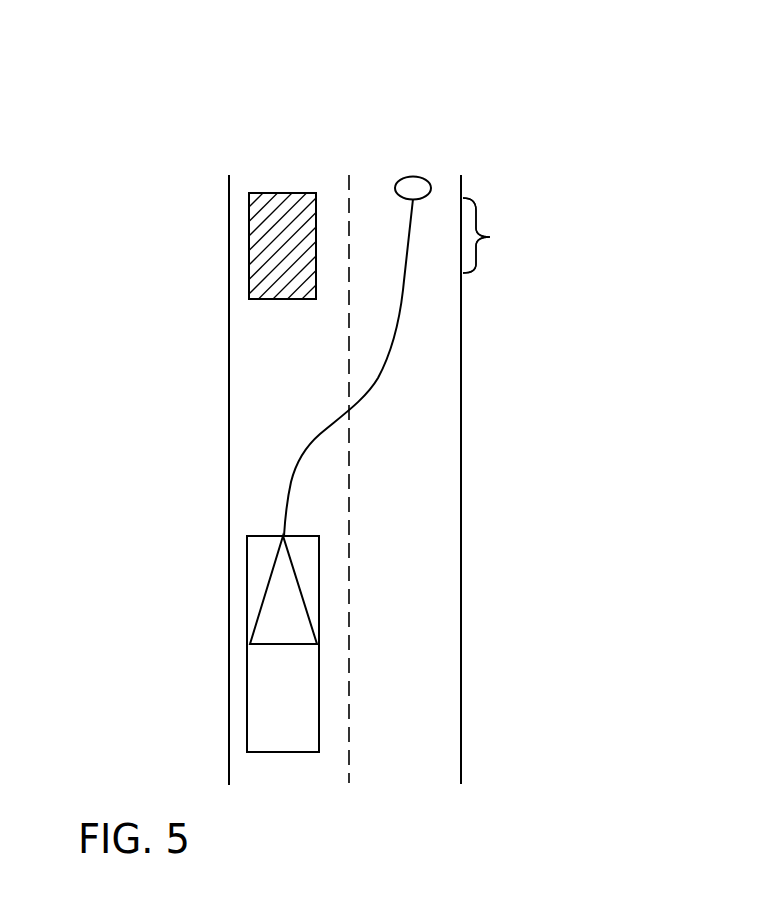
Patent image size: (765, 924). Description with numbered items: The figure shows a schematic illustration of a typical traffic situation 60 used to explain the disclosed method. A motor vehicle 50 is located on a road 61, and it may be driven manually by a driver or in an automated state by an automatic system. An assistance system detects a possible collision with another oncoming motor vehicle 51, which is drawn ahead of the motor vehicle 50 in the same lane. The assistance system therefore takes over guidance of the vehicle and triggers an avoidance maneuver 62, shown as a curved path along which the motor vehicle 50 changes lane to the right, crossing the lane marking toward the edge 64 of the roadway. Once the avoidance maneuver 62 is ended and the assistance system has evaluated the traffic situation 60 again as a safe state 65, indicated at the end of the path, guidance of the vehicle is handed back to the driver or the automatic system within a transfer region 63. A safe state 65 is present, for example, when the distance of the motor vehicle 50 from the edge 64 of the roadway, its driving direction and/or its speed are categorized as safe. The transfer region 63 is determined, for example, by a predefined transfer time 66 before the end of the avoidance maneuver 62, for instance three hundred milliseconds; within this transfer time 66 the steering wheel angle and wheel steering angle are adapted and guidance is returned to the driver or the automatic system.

The motor vehicle 50 is at (275, 687).
The oncoming motor vehicle 51 is at (279, 251).
The traffic situation 60 is at (203, 107).
The road 61 is at (416, 722).
The avoidance maneuver 62 is at (312, 442).
The transfer region 63 is at (520, 235).
The edge of the roadway 64 is at (461, 353).
The safe state 65 is at (417, 188).
The transfer time 66 is at (476, 235).